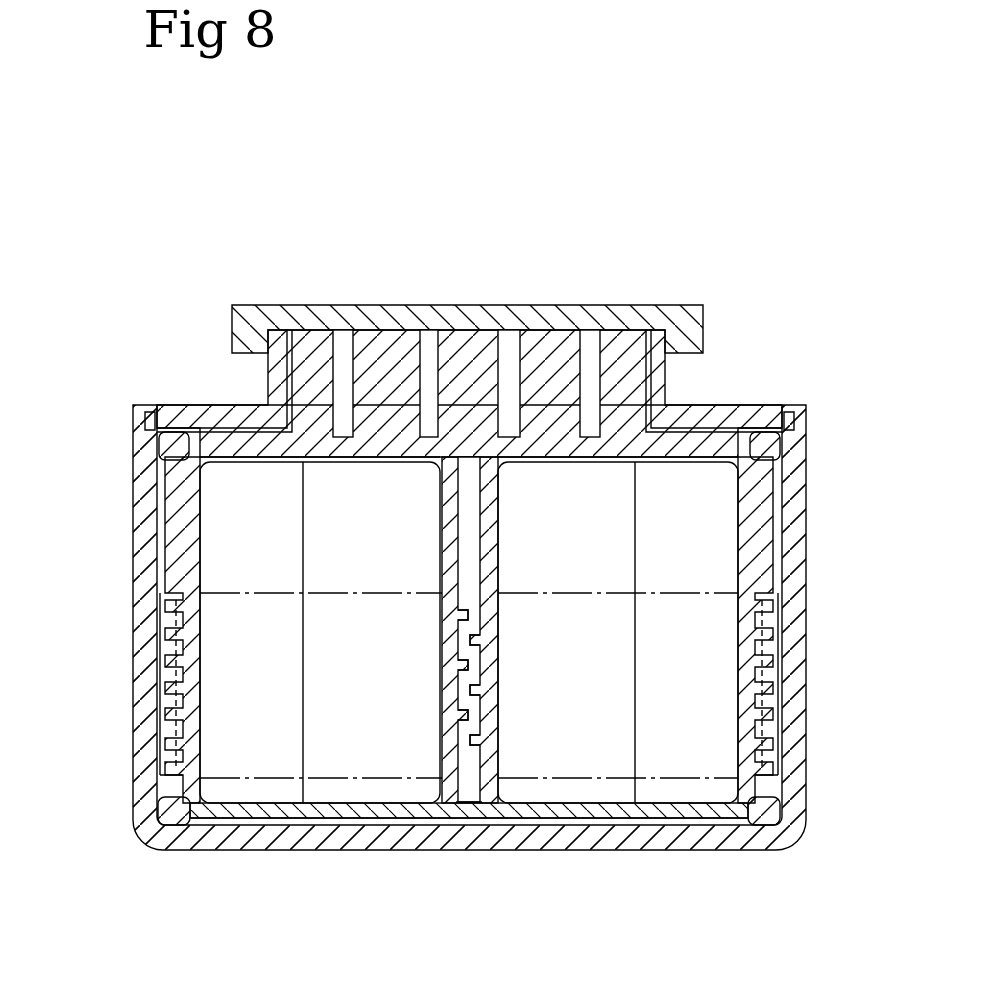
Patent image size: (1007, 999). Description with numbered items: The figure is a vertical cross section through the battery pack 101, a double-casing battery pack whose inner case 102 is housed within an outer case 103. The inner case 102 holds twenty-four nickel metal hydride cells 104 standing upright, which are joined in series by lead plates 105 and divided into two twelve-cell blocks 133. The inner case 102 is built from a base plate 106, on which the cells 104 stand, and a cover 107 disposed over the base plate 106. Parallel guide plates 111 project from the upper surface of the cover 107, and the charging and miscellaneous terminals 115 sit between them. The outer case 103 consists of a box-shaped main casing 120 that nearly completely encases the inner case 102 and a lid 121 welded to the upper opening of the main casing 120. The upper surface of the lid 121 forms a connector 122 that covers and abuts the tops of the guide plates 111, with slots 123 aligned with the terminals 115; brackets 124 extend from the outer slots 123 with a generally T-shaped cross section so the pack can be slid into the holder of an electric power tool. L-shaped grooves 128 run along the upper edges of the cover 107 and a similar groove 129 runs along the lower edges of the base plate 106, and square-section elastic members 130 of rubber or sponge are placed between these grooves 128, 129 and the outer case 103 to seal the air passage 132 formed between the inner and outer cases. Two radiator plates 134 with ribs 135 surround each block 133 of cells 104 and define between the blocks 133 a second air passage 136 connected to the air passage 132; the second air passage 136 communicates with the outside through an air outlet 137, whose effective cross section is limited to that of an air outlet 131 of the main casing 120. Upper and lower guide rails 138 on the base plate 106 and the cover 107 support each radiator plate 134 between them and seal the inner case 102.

The battery pack 101 is at (648, 263).
The inner case 102 is at (750, 415).
The outer case 103 is at (808, 830).
The nickel metal hydride cells 104 is at (212, 545).
The lead plates 105 is at (222, 445).
The base plate 106 is at (331, 808).
The cover 107 is at (232, 413).
The guide plates 111 is at (305, 305).
The miscellaneous terminals 115 is at (345, 335).
The main casing 120 is at (797, 513).
The lid 121 is at (760, 428).
The connector 122 is at (373, 305).
The slots 123 is at (432, 330).
The brackets 124 is at (703, 307).
The grooves 128 is at (165, 470).
The groove 129 is at (215, 823).
The elastic members 130 is at (804, 405).
The air outlet 131 is at (175, 685).
The air passage 132 is at (168, 637).
The twelve-cell blocks 133 is at (222, 478).
The radiator plates 134 is at (185, 765).
The ribs 135 is at (178, 712).
The second air passage 136 is at (458, 625).
The air outlet 137 is at (470, 795).
The guide rails 138 is at (447, 515).